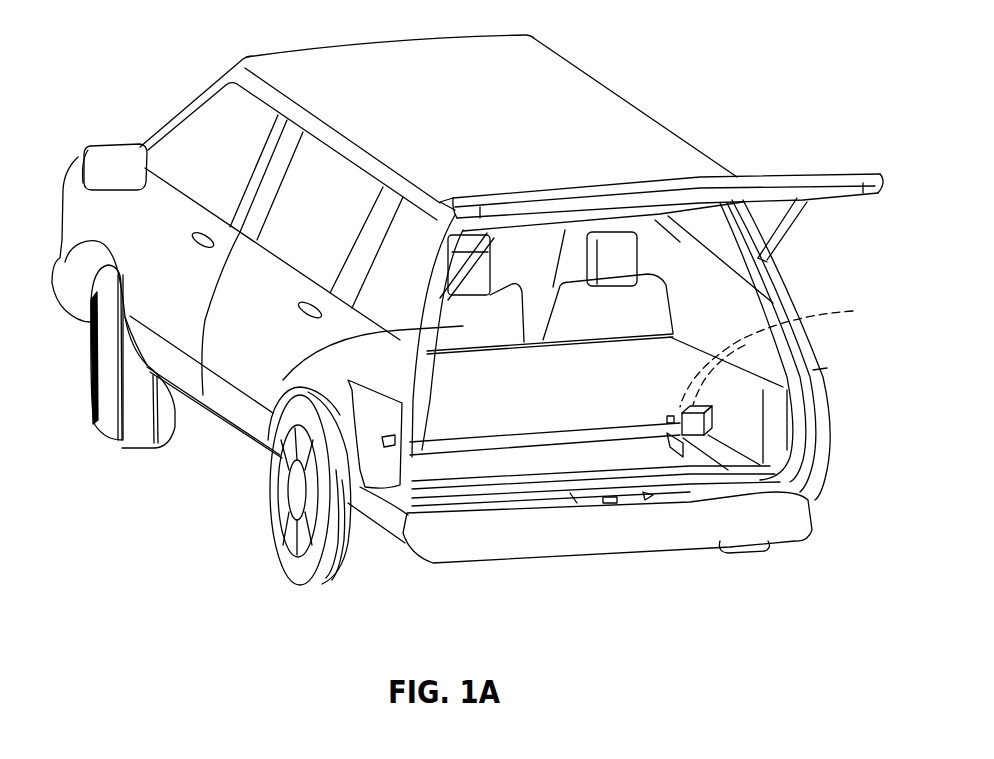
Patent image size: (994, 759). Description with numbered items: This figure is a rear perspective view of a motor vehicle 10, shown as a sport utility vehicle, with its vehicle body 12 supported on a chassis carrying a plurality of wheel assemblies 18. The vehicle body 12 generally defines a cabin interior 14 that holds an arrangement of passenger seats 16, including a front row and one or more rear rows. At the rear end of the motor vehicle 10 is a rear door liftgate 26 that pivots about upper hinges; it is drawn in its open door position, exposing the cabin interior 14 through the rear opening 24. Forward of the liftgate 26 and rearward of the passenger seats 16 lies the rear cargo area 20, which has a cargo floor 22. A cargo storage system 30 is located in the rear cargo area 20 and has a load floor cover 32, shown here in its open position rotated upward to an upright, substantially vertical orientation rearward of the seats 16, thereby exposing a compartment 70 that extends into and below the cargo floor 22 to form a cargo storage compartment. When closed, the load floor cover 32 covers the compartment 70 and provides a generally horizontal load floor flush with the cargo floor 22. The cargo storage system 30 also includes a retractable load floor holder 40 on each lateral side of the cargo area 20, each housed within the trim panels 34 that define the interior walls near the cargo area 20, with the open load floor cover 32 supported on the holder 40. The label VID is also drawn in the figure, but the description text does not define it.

The motor vehicle 10 is at (153, 100).
The vehicle body 12 is at (585, 75).
The cabin interior 14 is at (715, 248).
The passenger seats 16 is at (353, 305).
The wheel assemblies 18 is at (108, 427).
The rear cargo area 20 is at (728, 453).
The cargo floor 22 is at (773, 470).
The rear opening 24 is at (807, 415).
The rear door liftgate 26 is at (847, 167).
The cargo storage system 30 is at (425, 462).
The load floor cover 32 is at (458, 393).
The trim panels 34 is at (707, 423).
The retractable load floor holder 40 is at (690, 412).
The compartment 70 is at (580, 470).
The visual indicator device field of view VID is at (792, 354).